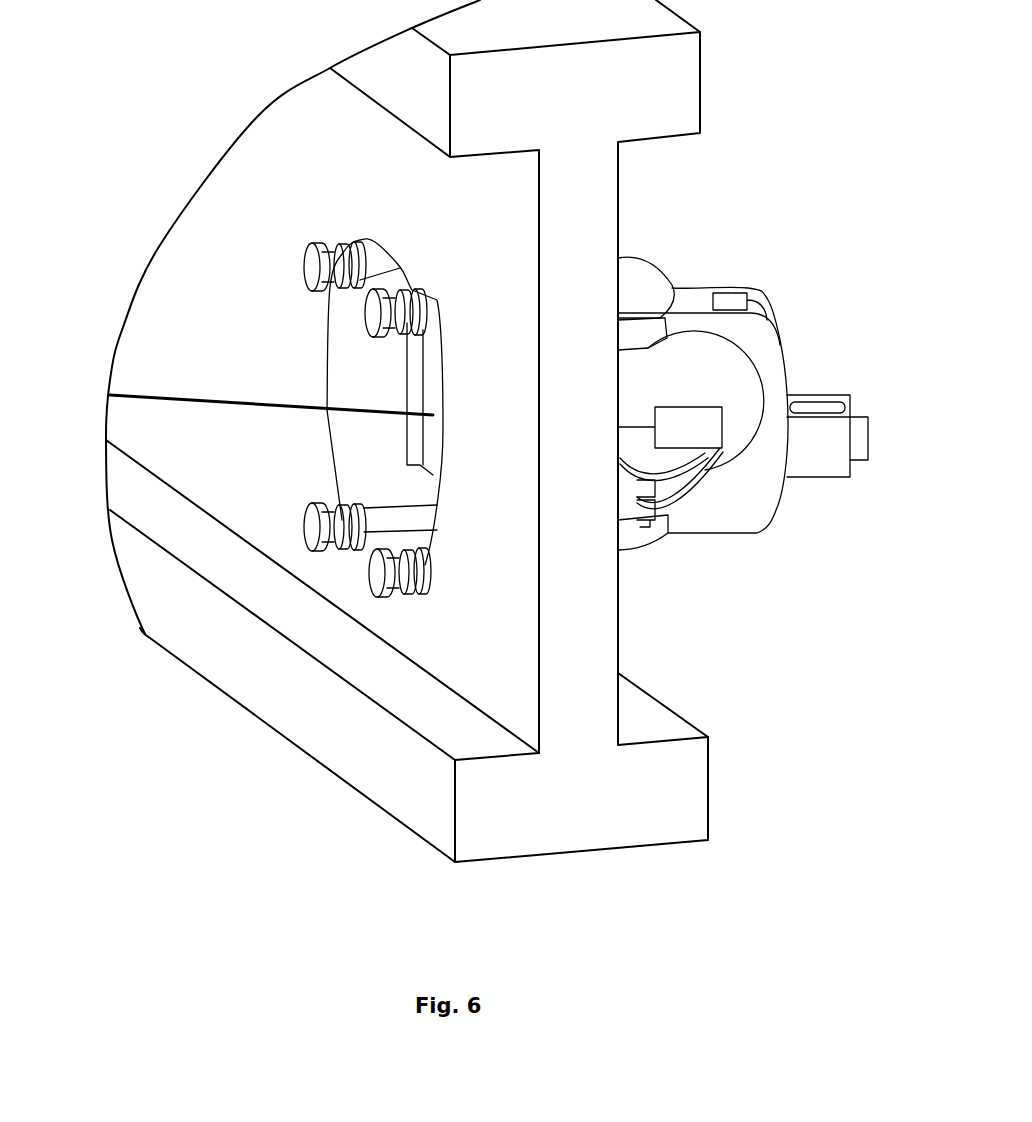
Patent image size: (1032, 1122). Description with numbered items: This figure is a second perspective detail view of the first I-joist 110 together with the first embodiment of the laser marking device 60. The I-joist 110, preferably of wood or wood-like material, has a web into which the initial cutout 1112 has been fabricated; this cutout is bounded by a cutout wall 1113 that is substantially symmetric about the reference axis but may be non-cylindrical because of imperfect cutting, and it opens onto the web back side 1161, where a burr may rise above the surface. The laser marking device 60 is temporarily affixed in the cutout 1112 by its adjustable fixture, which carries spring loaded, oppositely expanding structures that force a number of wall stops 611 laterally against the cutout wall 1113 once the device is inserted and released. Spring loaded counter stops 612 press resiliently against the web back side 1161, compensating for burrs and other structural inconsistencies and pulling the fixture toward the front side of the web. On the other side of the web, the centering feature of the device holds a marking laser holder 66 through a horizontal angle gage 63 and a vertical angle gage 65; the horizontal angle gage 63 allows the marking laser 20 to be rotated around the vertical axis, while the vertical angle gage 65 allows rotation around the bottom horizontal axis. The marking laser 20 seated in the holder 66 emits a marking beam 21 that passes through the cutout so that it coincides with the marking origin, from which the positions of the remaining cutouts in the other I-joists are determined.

The I-joist 110 is at (640, 890).
The receiving hole 1112 is at (327, 337).
The cutout wall 1113 is at (363, 463).
The web back side 1161 is at (495, 650).
The marking beam 21 is at (110, 395).
The wall stops 611 is at (387, 520).
The counter stops 612 is at (355, 540).
The laser marking device 60 is at (750, 422).
The horizontal angle gage 63 is at (642, 290).
The vertical angle gage 65 is at (752, 285).
The marking laser holder 66 is at (810, 437).
The marking laser 20 is at (870, 428).